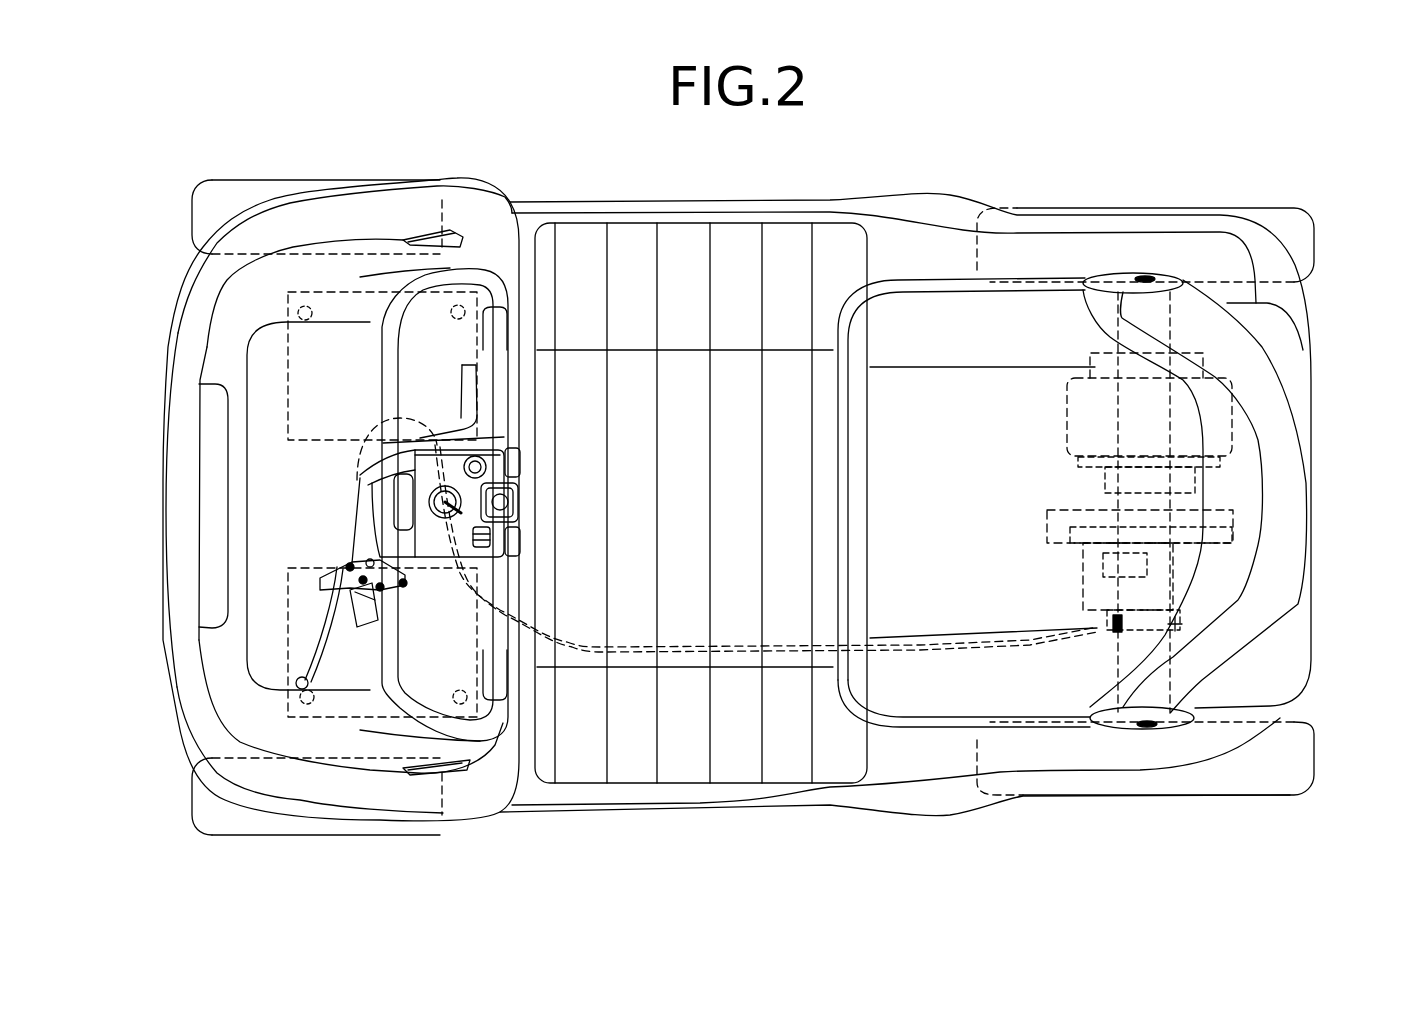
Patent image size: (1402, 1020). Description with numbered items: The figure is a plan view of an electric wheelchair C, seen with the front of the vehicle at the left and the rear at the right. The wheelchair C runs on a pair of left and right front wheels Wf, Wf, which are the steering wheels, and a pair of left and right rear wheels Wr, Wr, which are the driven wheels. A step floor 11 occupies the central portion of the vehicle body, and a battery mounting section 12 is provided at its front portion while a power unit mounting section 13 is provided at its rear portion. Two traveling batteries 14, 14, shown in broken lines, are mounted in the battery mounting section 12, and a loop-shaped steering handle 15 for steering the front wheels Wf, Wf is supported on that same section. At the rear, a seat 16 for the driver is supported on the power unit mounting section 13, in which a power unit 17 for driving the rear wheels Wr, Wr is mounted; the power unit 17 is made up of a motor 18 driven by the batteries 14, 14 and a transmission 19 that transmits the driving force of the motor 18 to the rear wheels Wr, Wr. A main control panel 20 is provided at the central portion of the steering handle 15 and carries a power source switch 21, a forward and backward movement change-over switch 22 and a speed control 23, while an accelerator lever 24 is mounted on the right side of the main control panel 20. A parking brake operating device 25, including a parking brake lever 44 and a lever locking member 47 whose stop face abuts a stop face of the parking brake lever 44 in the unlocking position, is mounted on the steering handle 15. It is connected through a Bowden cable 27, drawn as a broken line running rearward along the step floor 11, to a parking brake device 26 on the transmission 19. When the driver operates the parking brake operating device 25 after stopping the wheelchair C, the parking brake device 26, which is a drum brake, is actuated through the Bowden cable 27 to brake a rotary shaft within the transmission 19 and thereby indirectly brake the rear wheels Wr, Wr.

The step floor 11 is at (684, 262).
The battery mounting section 12 is at (178, 655).
The power unit mounting section 13 is at (1293, 342).
The traveling battery 14 is at (287, 312).
The steering handle 15 is at (390, 388).
The seat 16 is at (937, 310).
The power unit 17 is at (955, 428).
The motor 18 is at (1053, 437).
The transmission 19 is at (1130, 502).
The main control panel 20 is at (462, 533).
The power source switch 21 is at (505, 503).
The forward and backward movement change-over switch 22 is at (500, 443).
The speed control 23 is at (445, 512).
The accelerator lever 24 is at (467, 401).
The parking brake operating device 25 is at (325, 583).
The parking brake device 26 is at (1112, 630).
The Bowden cable 27 is at (672, 643).
The parking brake lever 44 is at (323, 637).
The lever locking member 47 is at (363, 607).
The electric wheelchair C is at (772, 186).
The front wheel Wf is at (230, 193).
The rear wheel Wr is at (1287, 220).